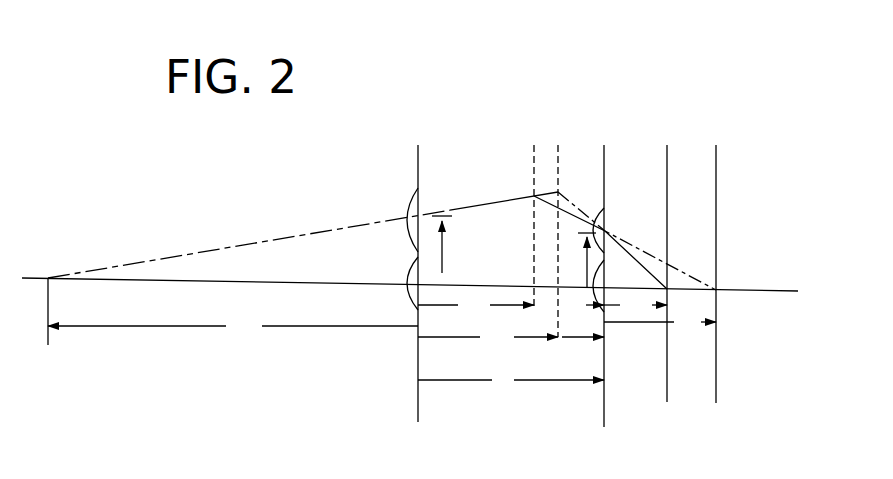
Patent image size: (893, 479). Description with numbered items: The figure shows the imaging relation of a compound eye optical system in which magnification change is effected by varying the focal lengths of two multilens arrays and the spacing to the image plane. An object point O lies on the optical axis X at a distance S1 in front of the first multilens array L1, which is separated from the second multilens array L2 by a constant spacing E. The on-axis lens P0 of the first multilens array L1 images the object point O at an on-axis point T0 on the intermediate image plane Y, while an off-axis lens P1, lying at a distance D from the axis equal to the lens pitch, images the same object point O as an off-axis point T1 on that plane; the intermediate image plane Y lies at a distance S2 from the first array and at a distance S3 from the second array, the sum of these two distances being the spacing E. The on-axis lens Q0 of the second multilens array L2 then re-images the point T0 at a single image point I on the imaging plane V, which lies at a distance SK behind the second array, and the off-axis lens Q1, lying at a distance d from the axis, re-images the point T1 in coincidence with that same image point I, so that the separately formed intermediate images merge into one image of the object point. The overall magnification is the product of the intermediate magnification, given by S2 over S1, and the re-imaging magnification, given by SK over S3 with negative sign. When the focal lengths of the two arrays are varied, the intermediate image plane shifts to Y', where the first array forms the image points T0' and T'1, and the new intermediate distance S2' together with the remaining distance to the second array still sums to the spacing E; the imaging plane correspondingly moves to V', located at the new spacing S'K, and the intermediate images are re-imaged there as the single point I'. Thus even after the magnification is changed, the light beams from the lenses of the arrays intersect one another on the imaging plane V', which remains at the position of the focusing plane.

The optical axis X is at (410, 280).
The object point O is at (42, 300).
The first multilens array L1 is at (418, 272).
The second multilens array L2 is at (603, 274).
The off-axis lens of the first multilens array P1 is at (402, 212).
The on-axis lens of the first multilens array P0 is at (400, 286).
The off-axis lens of the second multilens array Q1 is at (613, 230).
The on-axis lens of the second multilens array Q0 is at (612, 286).
The intermediate image plane Y is at (532, 214).
The varied intermediate image plane Y' is at (560, 229).
The off-axis intermediate image point T1 is at (504, 190).
The varied off-axis intermediate image point T'1 is at (315, 224).
The on-axis intermediate image point T0 is at (586, 242).
The varied on-axis intermediate image point T0' is at (636, 241).
The varied imaging plane V' is at (671, 262).
The imaging plane V is at (714, 262).
The image point I is at (724, 278).
The varied image point I' is at (676, 304).
The lens arrangement pitch of the first multilens array D is at (442, 244).
The lens arrangement pitch of the second multilens array d is at (587, 260).
The object distance S1 is at (233, 327).
The intermediate image distance S2 is at (476, 306).
The varied intermediate image distance S2' is at (488, 338).
The intermediate image to second array distance S3 is at (580, 332).
The varied image distance S'K is at (635, 306).
The image distance SK is at (660, 323).
The array spacing E is at (511, 381).